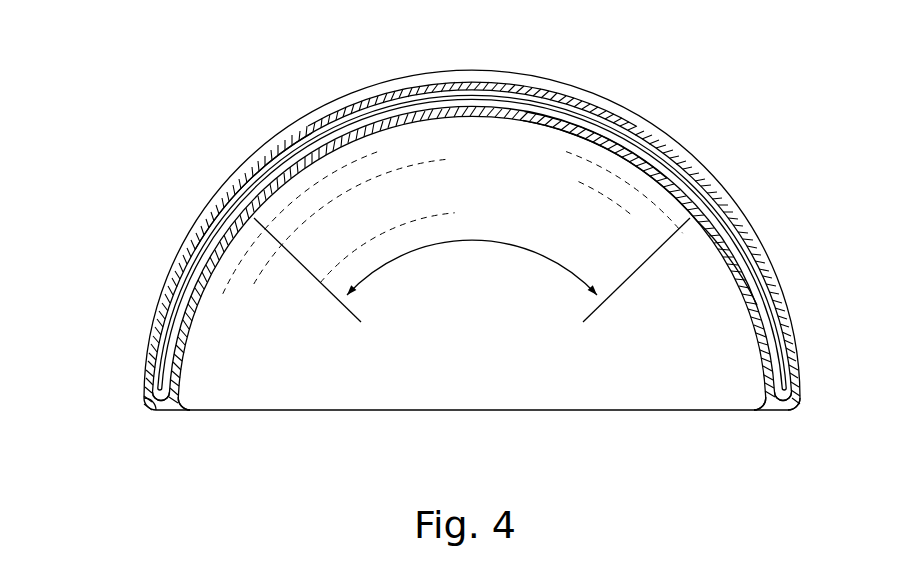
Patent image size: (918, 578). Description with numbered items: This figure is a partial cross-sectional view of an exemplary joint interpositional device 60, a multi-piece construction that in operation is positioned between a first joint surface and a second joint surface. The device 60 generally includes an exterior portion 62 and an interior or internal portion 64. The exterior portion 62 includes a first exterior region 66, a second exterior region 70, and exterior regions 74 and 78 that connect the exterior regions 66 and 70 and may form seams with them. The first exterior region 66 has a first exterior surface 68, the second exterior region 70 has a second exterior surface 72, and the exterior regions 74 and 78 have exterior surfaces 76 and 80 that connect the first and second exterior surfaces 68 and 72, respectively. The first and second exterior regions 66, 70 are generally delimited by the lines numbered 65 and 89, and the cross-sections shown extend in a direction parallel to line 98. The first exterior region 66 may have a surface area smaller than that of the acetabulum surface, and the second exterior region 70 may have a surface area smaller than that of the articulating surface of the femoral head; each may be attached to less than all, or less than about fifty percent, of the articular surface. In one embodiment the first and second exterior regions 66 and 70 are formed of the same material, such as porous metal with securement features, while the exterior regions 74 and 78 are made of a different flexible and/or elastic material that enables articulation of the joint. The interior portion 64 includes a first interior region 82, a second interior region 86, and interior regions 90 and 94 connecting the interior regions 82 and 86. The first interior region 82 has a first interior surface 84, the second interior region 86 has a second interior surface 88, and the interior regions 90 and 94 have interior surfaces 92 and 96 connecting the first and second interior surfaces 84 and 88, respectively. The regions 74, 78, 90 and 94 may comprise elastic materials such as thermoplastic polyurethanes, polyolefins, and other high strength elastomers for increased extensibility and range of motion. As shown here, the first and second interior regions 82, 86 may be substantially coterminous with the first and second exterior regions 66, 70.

The joint interpositional device 60 is at (748, 78).
The exterior portion 62 is at (134, 371).
The interior portion 64 is at (784, 400).
The line 65 is at (324, 288).
The first exterior region 66 is at (455, 82).
The first exterior surface 68 is at (509, 86).
The second exterior region 70 is at (482, 120).
The second exterior surface 72 is at (546, 134).
The exterior region 74 is at (238, 240).
The exterior surface 76 is at (220, 280).
The exterior region 78 is at (727, 278).
The exterior surface 80 is at (742, 316).
The first interior region 82 is at (573, 101).
The first interior surface 84 is at (623, 122).
The second interior region 86 is at (606, 153).
The second interior surface 88 is at (639, 178).
The line 89 is at (618, 292).
The interior region 90 is at (193, 346).
The interior surface 92 is at (181, 385).
The interior region 94 is at (762, 368).
The interior surface 96 is at (765, 395).
The line 98 is at (458, 254).